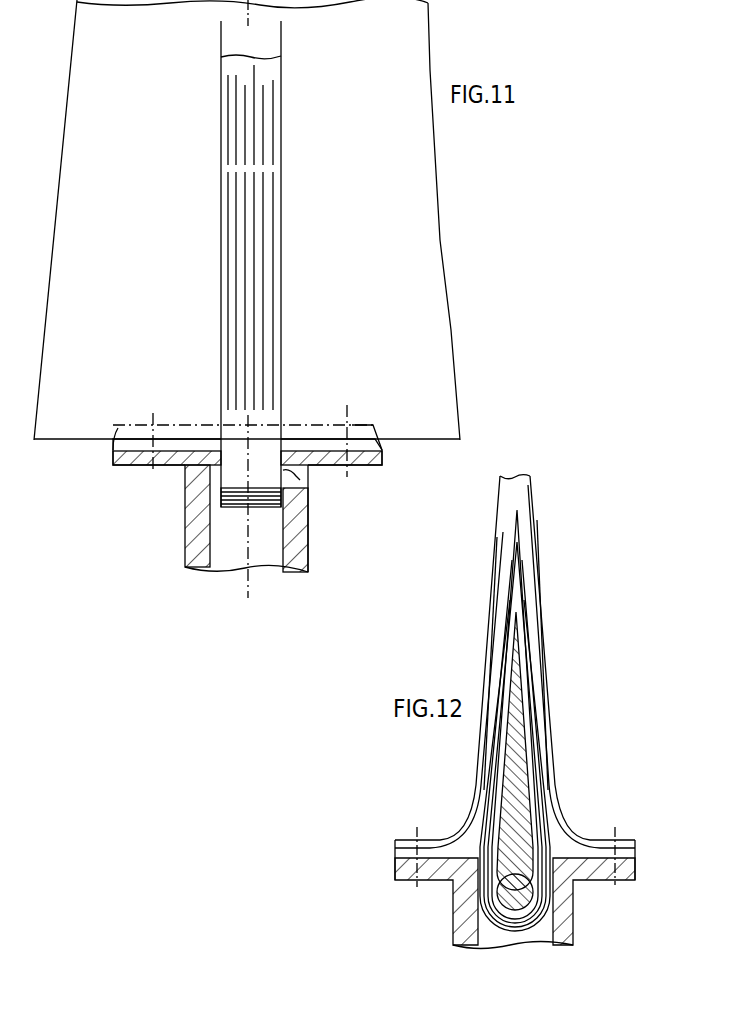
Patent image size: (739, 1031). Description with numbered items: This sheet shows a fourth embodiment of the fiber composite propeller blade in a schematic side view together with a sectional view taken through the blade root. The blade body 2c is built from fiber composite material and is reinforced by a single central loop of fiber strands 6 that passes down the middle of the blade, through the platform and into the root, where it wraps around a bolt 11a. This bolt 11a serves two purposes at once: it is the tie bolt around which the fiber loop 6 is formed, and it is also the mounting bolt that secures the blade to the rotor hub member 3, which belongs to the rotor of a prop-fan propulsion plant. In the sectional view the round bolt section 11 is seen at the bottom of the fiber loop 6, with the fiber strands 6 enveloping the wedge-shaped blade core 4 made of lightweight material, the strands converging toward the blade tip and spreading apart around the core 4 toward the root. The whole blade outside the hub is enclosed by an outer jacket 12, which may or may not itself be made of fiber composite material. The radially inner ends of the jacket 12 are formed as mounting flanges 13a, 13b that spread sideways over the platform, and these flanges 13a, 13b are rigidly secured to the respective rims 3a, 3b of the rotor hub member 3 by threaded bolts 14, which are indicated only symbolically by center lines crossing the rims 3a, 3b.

In FIG. 11, the blade body 2c is at (433, 225).
In FIG. 12, the blade body 2c is at (572, 606).
In FIG. 11, the fiber strands 6 is at (270, 317).
In FIG. 12, the fiber strands 6 is at (533, 742).
In FIG. 11, the threaded bolts 14 is at (347, 413).
In FIG. 12, the threaded bolts 14 is at (620, 833).
In FIG. 11, the rim 3b is at (133, 458).
In FIG. 12, the rim 3b is at (407, 870).
In FIG. 11, the rim 3a is at (373, 460).
In FIG. 12, the rim 3a is at (623, 880).
In FIG. 11, the rotor hub member 3 is at (297, 558).
In FIG. 11, the bolt 11a is at (305, 477).
In FIG. 11, the outer jacket 12 is at (248, 598).
In FIG. 12, the outer jacket 12 is at (543, 688).
In FIG. 12, the mounting flange 13b is at (403, 853).
In FIG. 12, the mounting flange 13a is at (593, 843).
In FIG. 12, the blade core 4 is at (508, 798).
In FIG. 12, the core insert 11 is at (527, 898).